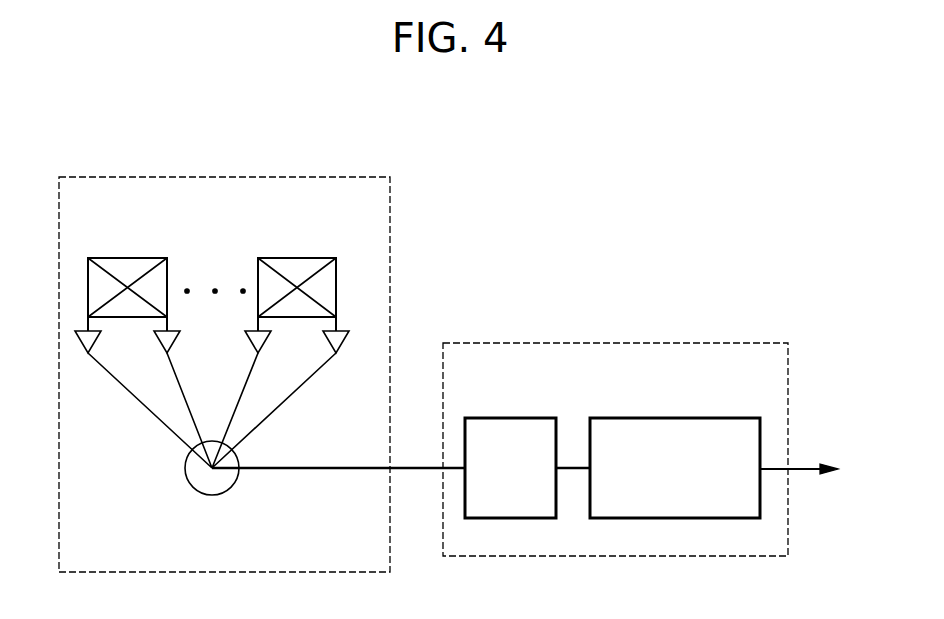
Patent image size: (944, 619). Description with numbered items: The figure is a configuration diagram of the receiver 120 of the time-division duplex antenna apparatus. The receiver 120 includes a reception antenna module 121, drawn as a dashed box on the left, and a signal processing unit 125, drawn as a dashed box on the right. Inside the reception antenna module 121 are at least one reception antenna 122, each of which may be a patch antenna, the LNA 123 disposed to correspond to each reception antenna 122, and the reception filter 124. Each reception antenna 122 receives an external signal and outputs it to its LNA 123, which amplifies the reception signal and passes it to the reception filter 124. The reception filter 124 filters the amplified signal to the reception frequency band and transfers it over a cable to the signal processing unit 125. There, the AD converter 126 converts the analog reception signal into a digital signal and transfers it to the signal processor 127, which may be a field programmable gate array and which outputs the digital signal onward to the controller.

The receiver 120 is at (495, 228).
The reception antenna module 121 is at (223, 176).
The reception antenna 122 is at (127, 258).
The LNA 123 is at (85, 345).
The reception filter 124 is at (210, 495).
The signal processing unit 125 is at (582, 342).
The AD converter 126 is at (510, 417).
The signal processor 127 is at (676, 417).